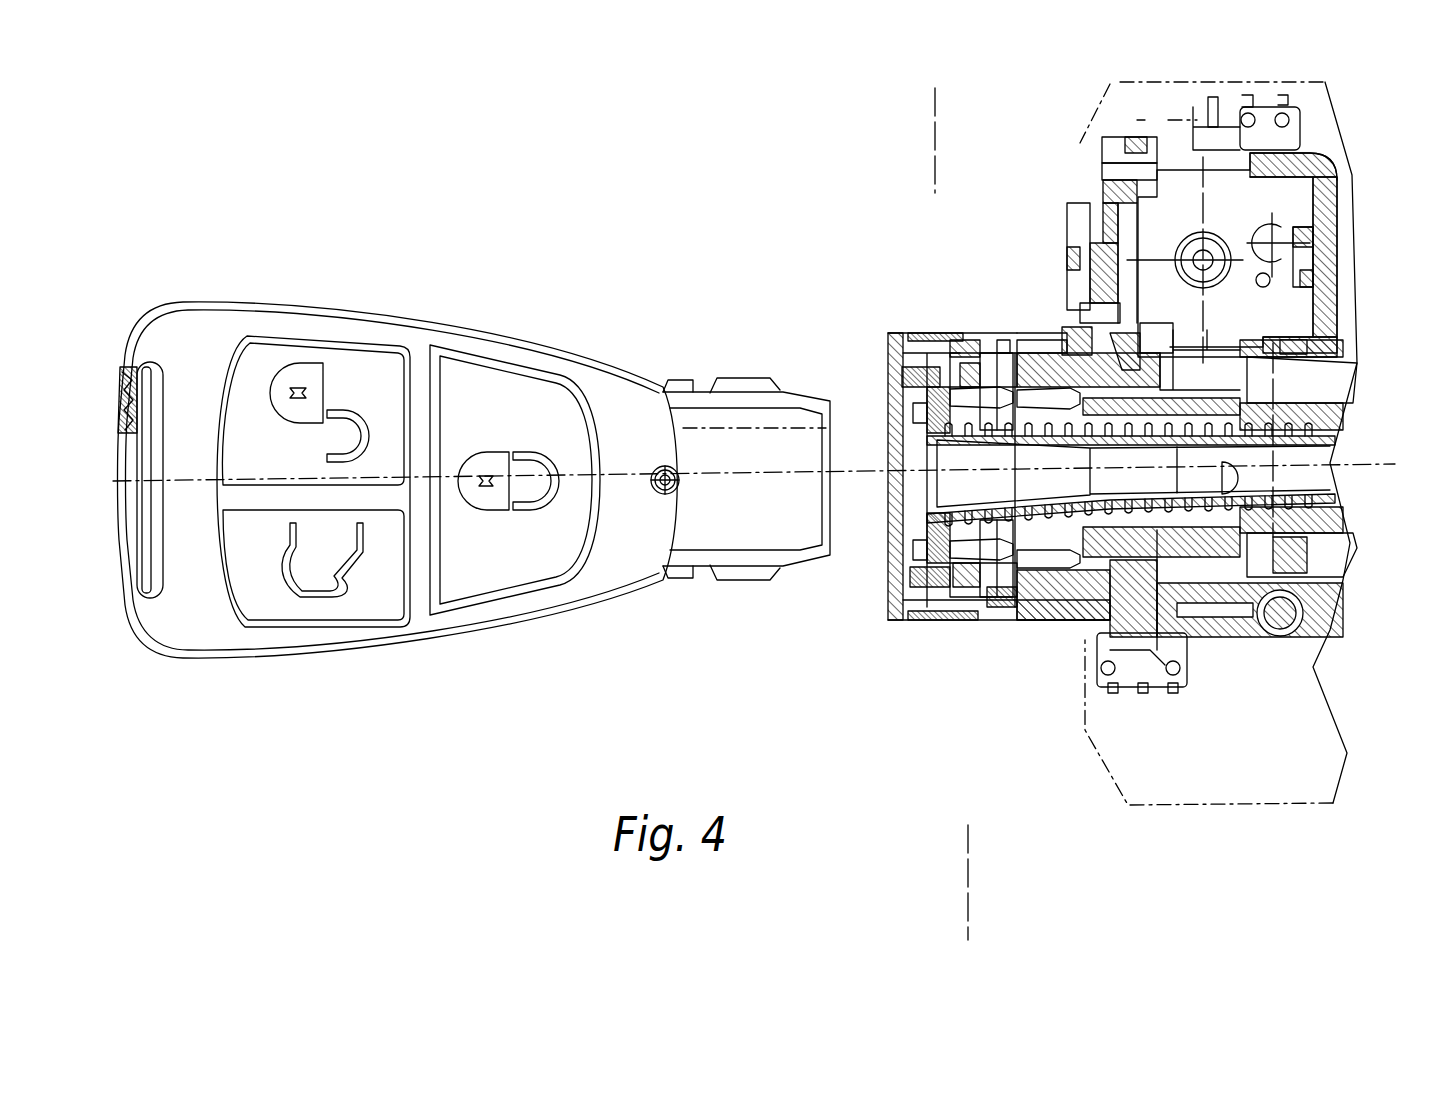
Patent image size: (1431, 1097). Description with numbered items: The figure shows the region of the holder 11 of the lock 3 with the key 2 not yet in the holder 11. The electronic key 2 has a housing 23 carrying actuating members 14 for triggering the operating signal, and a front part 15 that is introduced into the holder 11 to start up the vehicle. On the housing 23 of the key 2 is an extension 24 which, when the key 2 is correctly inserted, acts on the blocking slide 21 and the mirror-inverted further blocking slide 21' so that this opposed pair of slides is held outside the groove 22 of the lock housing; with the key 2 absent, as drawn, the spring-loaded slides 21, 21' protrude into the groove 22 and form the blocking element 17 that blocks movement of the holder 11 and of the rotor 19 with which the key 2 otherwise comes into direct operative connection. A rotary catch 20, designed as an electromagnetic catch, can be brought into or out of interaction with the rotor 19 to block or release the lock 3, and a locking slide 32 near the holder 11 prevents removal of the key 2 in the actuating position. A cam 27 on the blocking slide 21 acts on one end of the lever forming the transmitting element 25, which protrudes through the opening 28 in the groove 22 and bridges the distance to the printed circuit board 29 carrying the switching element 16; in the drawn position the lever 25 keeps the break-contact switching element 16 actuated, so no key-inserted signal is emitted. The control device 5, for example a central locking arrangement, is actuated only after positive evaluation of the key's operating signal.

The key 2 is at (474, 283).
The lock 3 is at (998, 190).
The control device 5 is at (925, 111).
The holder 11 is at (1218, 443).
The actuating members 14 is at (356, 378).
The front part 15 is at (747, 527).
The switching element 16 is at (1077, 287).
The blocking element 17 is at (982, 612).
The rotor 19 is at (1057, 613).
The rotary catch 20 is at (1293, 207).
The blocking slide 21 is at (937, 310).
The further blocking slide 21' is at (952, 690).
The groove 22 is at (992, 323).
The housing 23 is at (203, 590).
The extension 24 is at (743, 385).
The transmitting element 25 is at (995, 318).
The cam 27 is at (1013, 327).
The opening 28 is at (988, 320).
The printed circuit board 29 is at (1090, 197).
The locking slide 32 is at (890, 343).